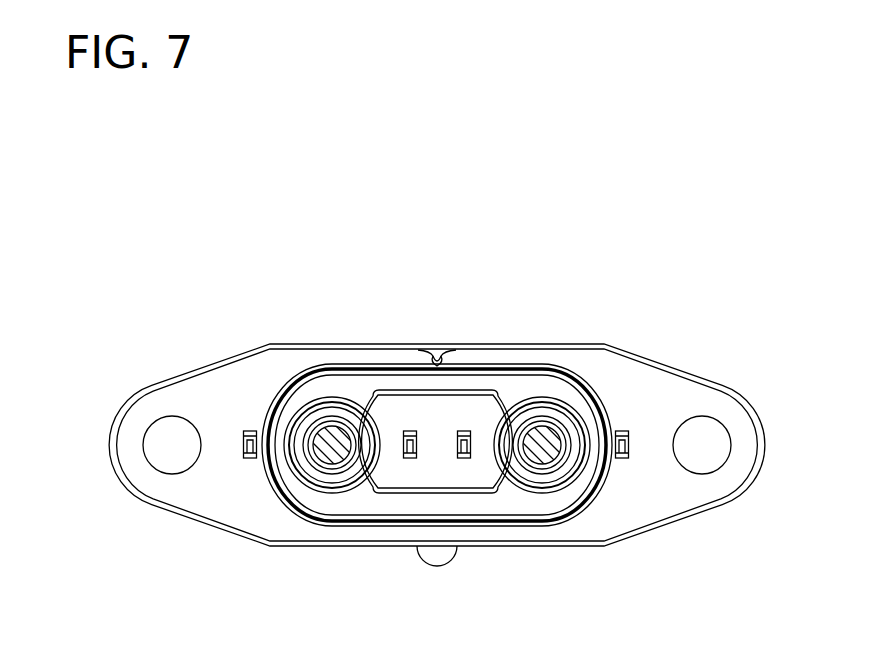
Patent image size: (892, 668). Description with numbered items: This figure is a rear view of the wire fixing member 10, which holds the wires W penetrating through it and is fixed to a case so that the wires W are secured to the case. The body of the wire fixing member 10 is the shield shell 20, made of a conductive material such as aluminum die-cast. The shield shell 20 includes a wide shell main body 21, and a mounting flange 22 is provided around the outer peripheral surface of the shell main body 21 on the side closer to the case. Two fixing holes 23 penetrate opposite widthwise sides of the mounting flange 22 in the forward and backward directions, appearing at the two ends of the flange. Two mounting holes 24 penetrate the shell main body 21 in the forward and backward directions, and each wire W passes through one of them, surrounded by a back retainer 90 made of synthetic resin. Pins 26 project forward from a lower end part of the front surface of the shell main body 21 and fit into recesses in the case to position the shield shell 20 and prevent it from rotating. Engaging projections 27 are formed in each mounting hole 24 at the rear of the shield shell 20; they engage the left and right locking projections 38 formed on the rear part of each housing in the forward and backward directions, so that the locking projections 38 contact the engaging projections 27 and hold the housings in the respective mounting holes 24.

The wire fixing member 10 is at (432, 231).
The shield shell 20 is at (337, 340).
The shell main body 21 is at (504, 392).
The mounting flange 22 is at (660, 382).
The fixing holes 23 is at (158, 440).
The mounting holes 24 is at (304, 450).
The pins 26 is at (437, 562).
The engaging projections 27 is at (250, 431).
The locking projections 38 is at (244, 450).
The back retainers 90 is at (313, 408).
The wires W is at (338, 455).